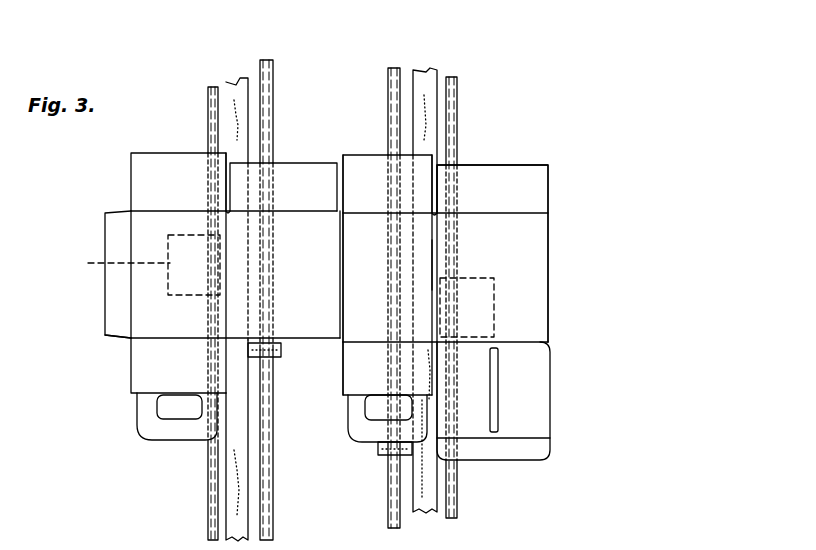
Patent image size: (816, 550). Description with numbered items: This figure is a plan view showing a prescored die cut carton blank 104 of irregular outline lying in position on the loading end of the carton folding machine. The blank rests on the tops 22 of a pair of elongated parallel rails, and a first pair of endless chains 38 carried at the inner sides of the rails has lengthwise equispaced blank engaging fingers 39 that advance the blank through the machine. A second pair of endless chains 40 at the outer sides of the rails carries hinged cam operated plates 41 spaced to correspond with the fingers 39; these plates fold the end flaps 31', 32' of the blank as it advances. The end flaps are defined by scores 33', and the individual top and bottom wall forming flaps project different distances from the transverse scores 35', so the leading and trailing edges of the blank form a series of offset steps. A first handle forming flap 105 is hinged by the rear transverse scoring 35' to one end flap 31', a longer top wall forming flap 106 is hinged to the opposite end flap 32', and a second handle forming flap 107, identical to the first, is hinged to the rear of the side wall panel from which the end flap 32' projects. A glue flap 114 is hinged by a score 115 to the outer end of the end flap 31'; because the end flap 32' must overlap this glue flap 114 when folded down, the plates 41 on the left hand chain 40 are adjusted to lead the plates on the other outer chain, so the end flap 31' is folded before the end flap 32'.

The rail top 22 is at (231, 92).
The end flap 31' is at (197, 245).
The end flap 32' is at (522, 253).
The score 33' is at (337, 265).
The rear transverse scoring 35' is at (331, 248).
The endless chain 38 is at (268, 440).
The blank engaging finger 39 is at (281, 355).
The endless chain 40 is at (208, 480).
The hinged cam operated plate 41 is at (510, 300).
The die cut carton blank 104 is at (558, 152).
The first handle forming flap 105 is at (143, 365).
The top wall forming flap 106 is at (540, 392).
The second handle forming flap 107 is at (358, 385).
The glue flap 114 is at (115, 298).
The score 115 is at (132, 312).